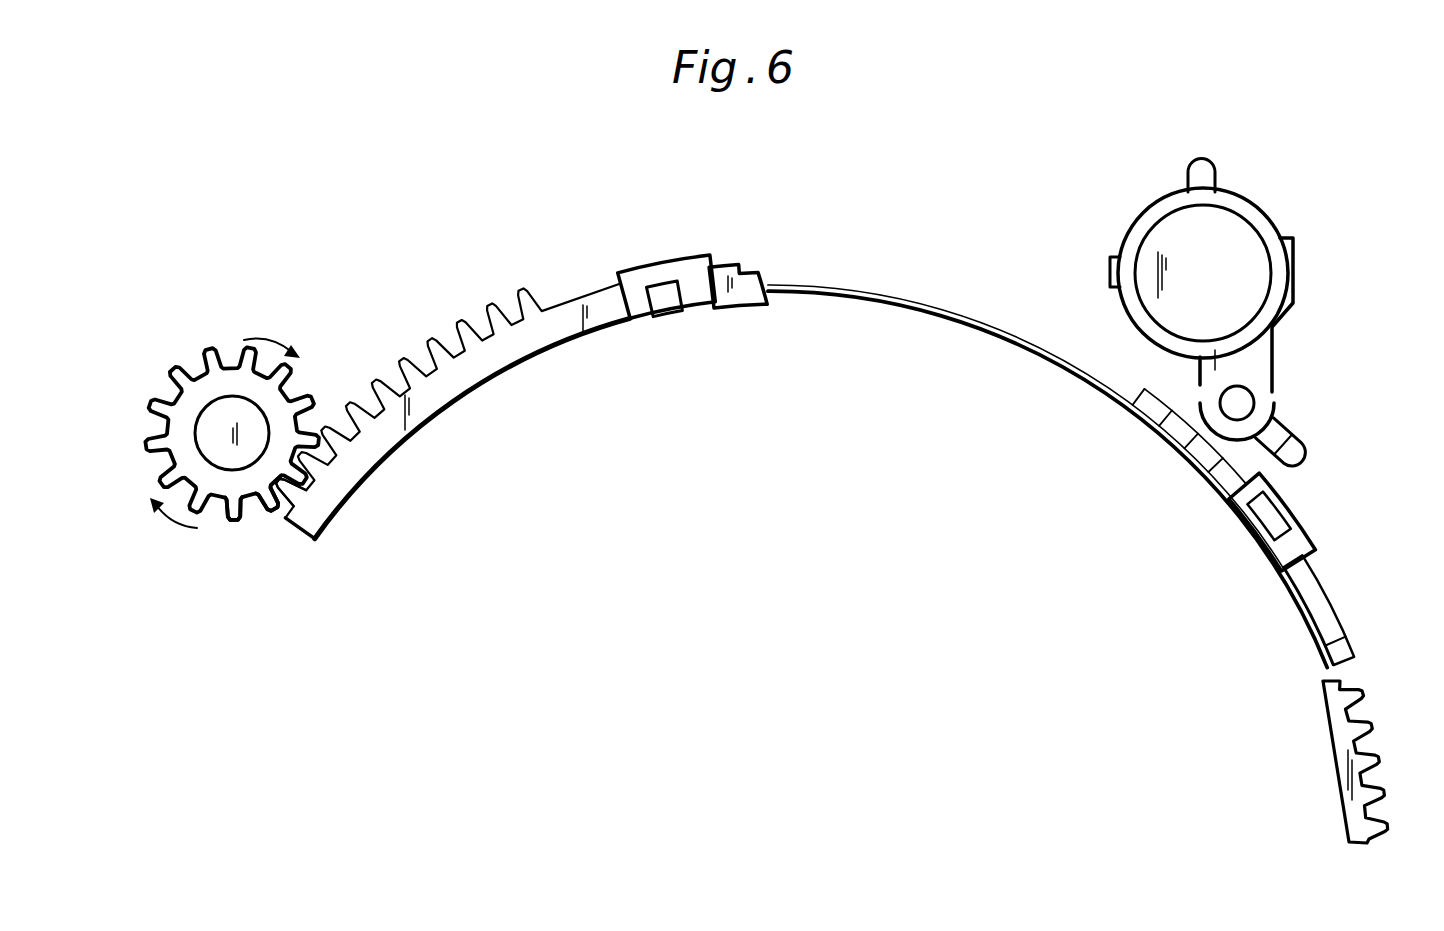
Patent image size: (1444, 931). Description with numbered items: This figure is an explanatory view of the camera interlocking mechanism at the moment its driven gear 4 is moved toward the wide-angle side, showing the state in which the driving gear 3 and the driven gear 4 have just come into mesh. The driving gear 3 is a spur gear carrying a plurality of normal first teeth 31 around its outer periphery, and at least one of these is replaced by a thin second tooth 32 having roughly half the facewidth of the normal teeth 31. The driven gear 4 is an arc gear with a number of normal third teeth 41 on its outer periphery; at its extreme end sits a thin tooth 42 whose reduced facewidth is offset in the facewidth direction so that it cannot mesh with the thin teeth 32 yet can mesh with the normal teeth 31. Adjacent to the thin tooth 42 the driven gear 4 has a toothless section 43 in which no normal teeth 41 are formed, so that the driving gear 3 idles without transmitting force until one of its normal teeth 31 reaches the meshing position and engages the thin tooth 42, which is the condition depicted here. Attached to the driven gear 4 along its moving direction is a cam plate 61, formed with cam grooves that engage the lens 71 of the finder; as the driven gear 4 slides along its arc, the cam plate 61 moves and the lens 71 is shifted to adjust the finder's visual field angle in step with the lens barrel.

The driving gear 3 is at (232, 451).
The first teeth 31 is at (323, 480).
The second teeth 32 is at (267, 498).
The driven gear 4 is at (845, 530).
The third teeth 41 is at (325, 456).
The thin tooth 42 is at (287, 488).
The toothless section 43 is at (337, 452).
The cam plate 61 is at (1247, 478).
The lens 71 is at (1141, 250).